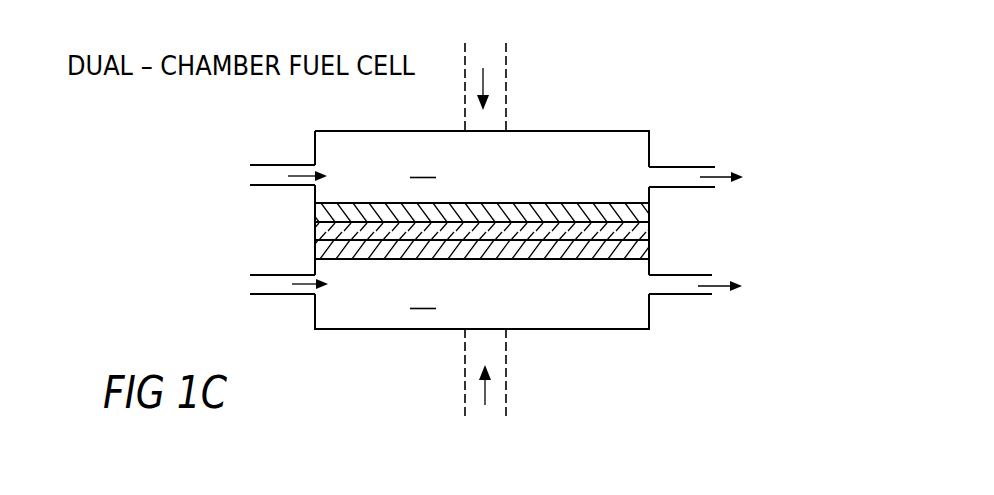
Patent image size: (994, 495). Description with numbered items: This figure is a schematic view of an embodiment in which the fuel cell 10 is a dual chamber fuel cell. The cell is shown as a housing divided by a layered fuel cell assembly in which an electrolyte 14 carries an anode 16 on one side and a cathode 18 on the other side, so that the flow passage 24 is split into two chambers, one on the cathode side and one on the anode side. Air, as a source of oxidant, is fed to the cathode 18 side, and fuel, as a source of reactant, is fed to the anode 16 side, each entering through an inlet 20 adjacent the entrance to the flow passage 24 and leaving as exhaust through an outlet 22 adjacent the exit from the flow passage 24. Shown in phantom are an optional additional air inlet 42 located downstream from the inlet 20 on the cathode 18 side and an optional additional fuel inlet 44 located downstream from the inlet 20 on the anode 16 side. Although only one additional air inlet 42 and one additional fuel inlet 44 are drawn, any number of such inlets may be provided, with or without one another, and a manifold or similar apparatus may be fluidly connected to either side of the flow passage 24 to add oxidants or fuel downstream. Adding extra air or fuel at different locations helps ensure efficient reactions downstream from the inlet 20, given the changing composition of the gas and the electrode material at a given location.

The fuel cell 10 is at (770, 133).
The electrolyte 14 is at (649, 227).
The anode 16 is at (567, 259).
The cathode 18 is at (554, 203).
The inlet 20 is at (242, 229).
The outlet 22 is at (792, 231).
The flow passage 24 is at (423, 231).
The additional air inlet 42 is at (507, 122).
The additional fuel inlet 44 is at (507, 400).